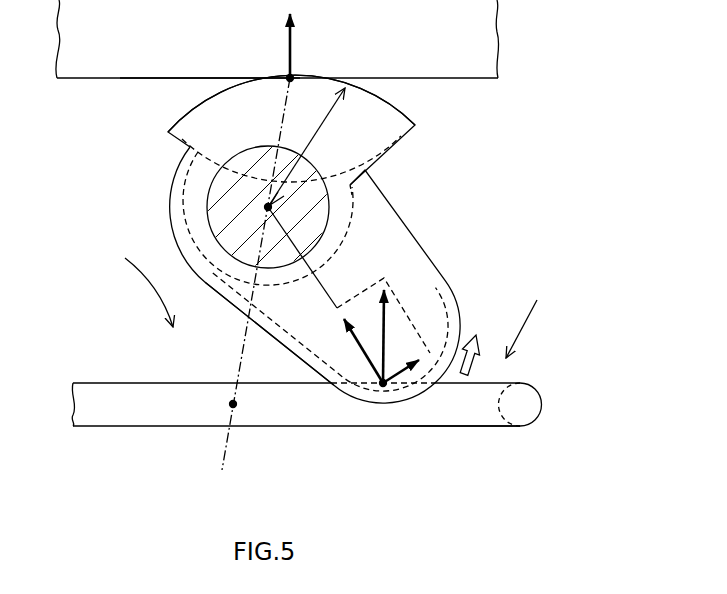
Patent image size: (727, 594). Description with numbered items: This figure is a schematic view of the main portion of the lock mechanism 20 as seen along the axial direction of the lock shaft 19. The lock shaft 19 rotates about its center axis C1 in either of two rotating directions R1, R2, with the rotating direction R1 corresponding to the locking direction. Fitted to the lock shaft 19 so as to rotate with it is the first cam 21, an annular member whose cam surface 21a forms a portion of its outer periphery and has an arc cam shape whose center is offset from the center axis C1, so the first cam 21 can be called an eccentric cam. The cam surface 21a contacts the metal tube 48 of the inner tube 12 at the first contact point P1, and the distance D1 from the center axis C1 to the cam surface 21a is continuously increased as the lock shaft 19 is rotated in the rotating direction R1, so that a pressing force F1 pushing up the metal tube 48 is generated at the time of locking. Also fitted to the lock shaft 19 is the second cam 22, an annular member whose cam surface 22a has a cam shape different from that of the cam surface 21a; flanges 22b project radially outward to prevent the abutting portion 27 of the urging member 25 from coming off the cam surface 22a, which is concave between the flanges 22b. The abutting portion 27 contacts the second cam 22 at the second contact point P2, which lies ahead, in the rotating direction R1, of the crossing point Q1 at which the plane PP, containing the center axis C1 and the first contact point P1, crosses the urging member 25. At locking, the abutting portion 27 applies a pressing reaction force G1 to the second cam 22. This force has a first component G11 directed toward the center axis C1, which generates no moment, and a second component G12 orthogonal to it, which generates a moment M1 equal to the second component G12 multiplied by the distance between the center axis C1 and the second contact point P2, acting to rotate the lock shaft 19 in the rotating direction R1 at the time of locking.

The inner tube 12 is at (82, 82).
The metal tube 48 is at (137, 80).
The lock shaft 19 is at (208, 190).
The lock mechanism 20 is at (351, 284).
The first cam 21 is at (330, 136).
The cam surface 21a is at (402, 113).
The second cam 22 is at (335, 320).
The cam surface 22a is at (317, 352).
The flange 22b is at (278, 344).
The urging member 25 is at (113, 431).
The abutting portion 27 is at (475, 416).
The plane PP is at (241, 358).
The first contact point P1 is at (287, 76).
The crossing point Q1 is at (230, 405).
The center axis C1 is at (265, 207).
The second contact point P2 is at (382, 389).
The distance D1 is at (328, 112).
The pressing force F1 is at (293, 21).
The pressing reaction force G1 is at (386, 323).
The first component G11 is at (355, 350).
The second component G12 is at (406, 370).
The rotating direction R1 is at (138, 283).
The rotating direction R2 is at (522, 328).
The moment M1 is at (480, 366).